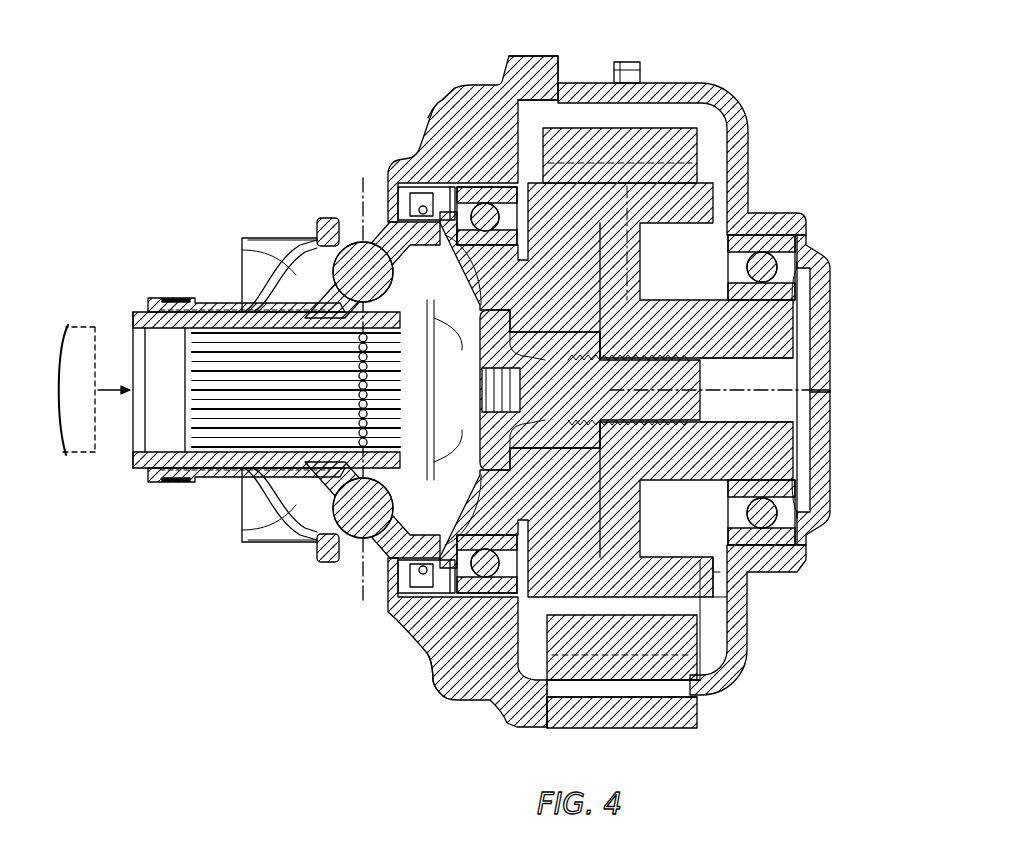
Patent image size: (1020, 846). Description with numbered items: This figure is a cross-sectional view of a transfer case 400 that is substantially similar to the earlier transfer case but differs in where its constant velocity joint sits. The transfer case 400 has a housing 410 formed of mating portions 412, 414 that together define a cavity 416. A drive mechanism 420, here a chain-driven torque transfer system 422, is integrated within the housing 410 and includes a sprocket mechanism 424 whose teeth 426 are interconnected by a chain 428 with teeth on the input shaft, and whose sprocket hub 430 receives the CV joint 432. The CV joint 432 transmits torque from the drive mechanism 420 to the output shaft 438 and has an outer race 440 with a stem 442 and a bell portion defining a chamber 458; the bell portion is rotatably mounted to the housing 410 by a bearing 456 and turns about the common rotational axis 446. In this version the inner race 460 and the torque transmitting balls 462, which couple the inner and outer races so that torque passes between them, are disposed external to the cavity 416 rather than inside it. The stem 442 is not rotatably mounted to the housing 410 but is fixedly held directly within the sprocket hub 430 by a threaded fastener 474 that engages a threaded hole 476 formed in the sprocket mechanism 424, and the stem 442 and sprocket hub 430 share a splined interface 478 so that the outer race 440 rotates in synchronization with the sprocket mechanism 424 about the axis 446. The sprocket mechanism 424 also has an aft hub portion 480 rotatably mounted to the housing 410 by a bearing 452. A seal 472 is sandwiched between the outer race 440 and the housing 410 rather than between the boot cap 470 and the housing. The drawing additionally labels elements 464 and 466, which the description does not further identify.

The transfer case 400 is at (340, 181).
The housing 410 is at (388, 162).
The mating portion 412 is at (420, 135).
The mating portion 414 is at (752, 152).
The cavity 416 is at (545, 120).
The drive mechanism 420 is at (712, 620).
The chain-driven torque transfer system 422 is at (741, 660).
The sprocket mechanism 424 is at (712, 603).
The teeth 426 is at (700, 716).
The chain 428 is at (470, 699).
The sprocket hub 430 is at (590, 505).
The constant velocity joint 432 is at (203, 269).
The output shaft 438 is at (82, 455).
The outer race 440 is at (418, 636).
The stem 442 is at (572, 255).
The common rotational axis 446 is at (770, 388).
The bearing 452 is at (762, 236).
The bearing 456 is at (432, 113).
The chamber 458 is at (303, 482).
The inner race 460 is at (261, 238).
The torque transmitting balls 462 is at (380, 521).
The clamp / block 464 is at (318, 246).
The boot 466 is at (253, 305).
The boot cap 470 is at (263, 247).
The seal 472 is at (392, 594).
The threaded fastener 474 is at (720, 572).
The threaded hole 476 is at (625, 392).
The splined interface 478 is at (482, 192).
The aft hub portion 480 is at (800, 510).